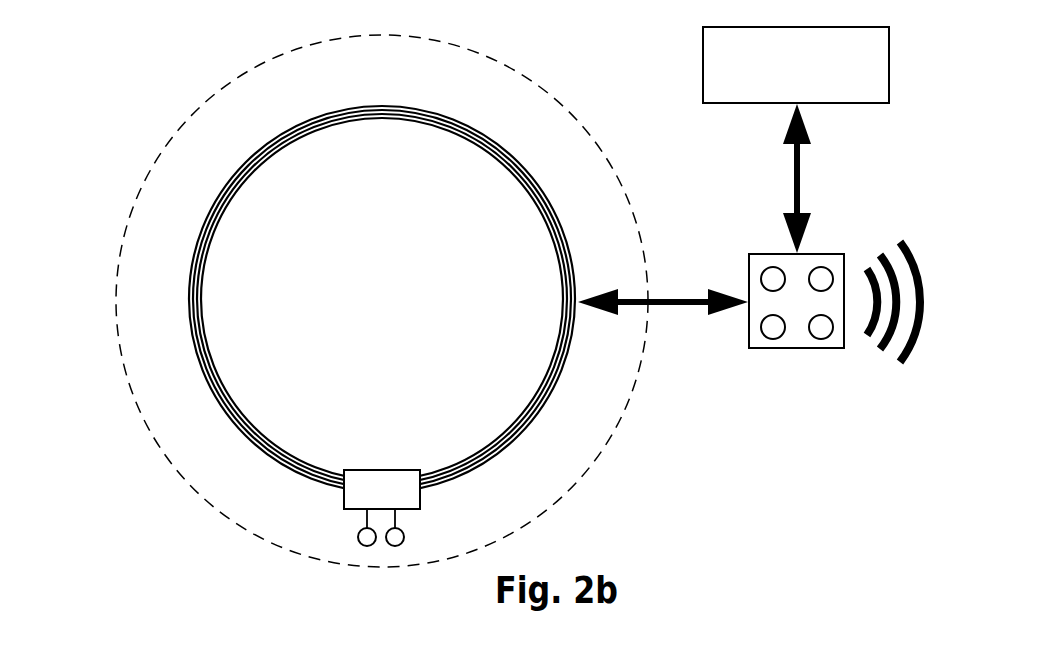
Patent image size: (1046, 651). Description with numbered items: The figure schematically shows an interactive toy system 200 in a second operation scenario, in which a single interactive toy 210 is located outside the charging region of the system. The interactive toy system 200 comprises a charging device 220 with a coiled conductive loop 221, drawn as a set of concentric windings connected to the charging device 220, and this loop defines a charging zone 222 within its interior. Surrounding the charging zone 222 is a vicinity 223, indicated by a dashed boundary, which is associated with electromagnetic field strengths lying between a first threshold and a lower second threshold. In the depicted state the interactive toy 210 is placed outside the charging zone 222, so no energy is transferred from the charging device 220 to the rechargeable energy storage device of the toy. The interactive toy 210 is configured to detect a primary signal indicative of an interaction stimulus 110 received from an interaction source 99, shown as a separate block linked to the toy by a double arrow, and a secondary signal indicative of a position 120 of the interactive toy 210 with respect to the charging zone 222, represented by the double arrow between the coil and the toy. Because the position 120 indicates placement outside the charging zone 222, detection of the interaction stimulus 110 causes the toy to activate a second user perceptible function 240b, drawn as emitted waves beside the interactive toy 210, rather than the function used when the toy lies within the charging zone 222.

The interaction source 99 is at (796, 65).
The interaction stimulus 110 is at (800, 182).
The position 120 is at (662, 306).
The interactive toy system 200 is at (358, 311).
The interactive toy 210 is at (793, 303).
The charging device 220 is at (375, 492).
The coiled conductive loop 221 is at (282, 467).
The charging zone 222 is at (343, 318).
The vicinity 223 is at (165, 225).
The second user perceptible function 240b is at (898, 307).